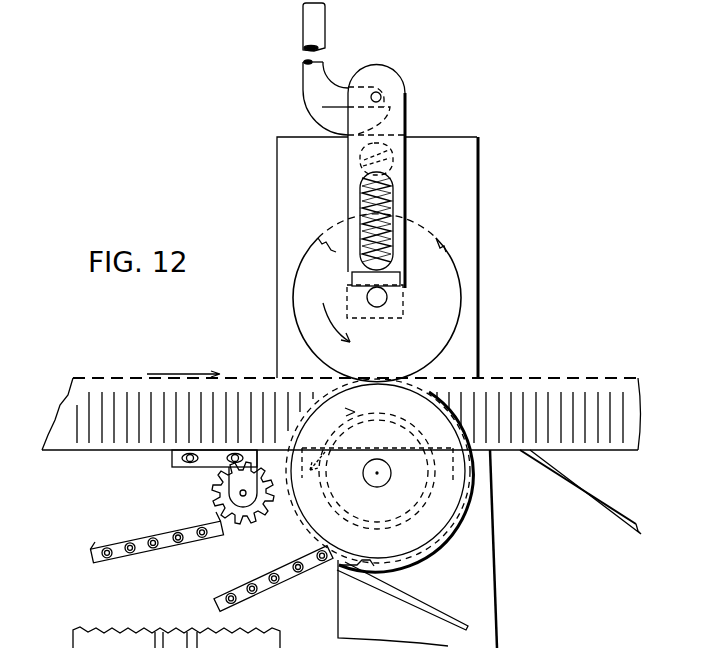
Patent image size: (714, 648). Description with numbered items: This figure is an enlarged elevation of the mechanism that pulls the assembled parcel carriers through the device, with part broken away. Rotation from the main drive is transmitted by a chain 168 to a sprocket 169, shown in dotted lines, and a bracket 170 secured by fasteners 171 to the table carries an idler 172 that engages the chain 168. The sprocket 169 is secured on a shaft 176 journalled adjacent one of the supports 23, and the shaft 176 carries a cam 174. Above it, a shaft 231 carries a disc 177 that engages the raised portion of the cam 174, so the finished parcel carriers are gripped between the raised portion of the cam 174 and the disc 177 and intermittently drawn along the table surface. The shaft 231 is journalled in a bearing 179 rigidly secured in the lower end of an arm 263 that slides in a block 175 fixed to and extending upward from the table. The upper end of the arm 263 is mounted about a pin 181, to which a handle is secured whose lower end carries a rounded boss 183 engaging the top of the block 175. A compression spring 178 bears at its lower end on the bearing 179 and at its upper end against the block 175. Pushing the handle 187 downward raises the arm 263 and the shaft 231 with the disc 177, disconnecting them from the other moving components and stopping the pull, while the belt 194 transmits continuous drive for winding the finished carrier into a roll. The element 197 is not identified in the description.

The handle 187 is at (327, 25).
The rounded boss 183 is at (335, 116).
The pin 181 is at (381, 99).
The arm 263 is at (393, 148).
The compression spring 178 is at (387, 191).
The block 175 is at (463, 213).
The bearing 179 is at (400, 280).
The shaft 231 is at (387, 298).
The disc 177 is at (432, 343).
The conveyor belt 197 is at (585, 373).
The bracket 170 is at (172, 456).
The fasteners 171 is at (203, 472).
The idler 172 is at (242, 515).
The chain 168 is at (92, 549).
The shaft 176 is at (391, 473).
The sprocket 169 is at (440, 495).
The cam 174 is at (460, 538).
The belt 194 is at (622, 521).
The supports 23 is at (483, 620).